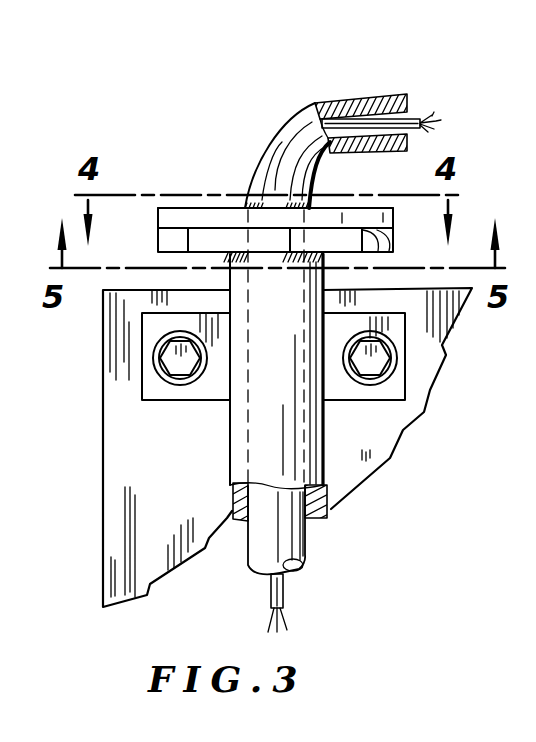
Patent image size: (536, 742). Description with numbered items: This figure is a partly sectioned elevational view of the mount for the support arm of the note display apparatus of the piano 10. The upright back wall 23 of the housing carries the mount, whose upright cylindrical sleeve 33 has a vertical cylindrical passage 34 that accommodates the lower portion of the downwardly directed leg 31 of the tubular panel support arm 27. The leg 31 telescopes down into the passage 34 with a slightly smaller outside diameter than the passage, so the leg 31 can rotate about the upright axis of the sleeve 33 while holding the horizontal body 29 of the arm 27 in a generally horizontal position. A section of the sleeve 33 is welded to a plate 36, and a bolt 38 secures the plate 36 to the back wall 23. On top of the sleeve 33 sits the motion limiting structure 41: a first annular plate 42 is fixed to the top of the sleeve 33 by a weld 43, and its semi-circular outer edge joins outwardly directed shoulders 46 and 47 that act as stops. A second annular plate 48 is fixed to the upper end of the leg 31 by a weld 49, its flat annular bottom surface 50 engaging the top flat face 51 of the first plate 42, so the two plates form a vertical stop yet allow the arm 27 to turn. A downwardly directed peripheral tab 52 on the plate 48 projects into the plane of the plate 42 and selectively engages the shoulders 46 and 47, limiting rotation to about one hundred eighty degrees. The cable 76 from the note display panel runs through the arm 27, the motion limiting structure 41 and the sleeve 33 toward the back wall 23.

The piano 10 is at (96, 564).
The back wall 23 is at (105, 453).
The panel support arm 27 is at (306, 92).
The body 29 is at (369, 94).
The leg 31 is at (288, 157).
The sleeve 33 is at (237, 460).
The passage 34 is at (258, 516).
The plate 36 is at (195, 402).
The bolt 38 is at (177, 366).
The motion limiting structure 41 is at (181, 187).
The first annular plate 42 is at (322, 240).
The weld 43 is at (266, 266).
The shoulder 46 is at (175, 241).
The shoulder 47 is at (394, 230).
The second annular plate 48 is at (375, 216).
The weld 49 is at (277, 203).
The bottom surface 50 is at (227, 230).
The top flat face 51 is at (290, 263).
The tab 52 is at (388, 258).
The cable 76 is at (421, 121).